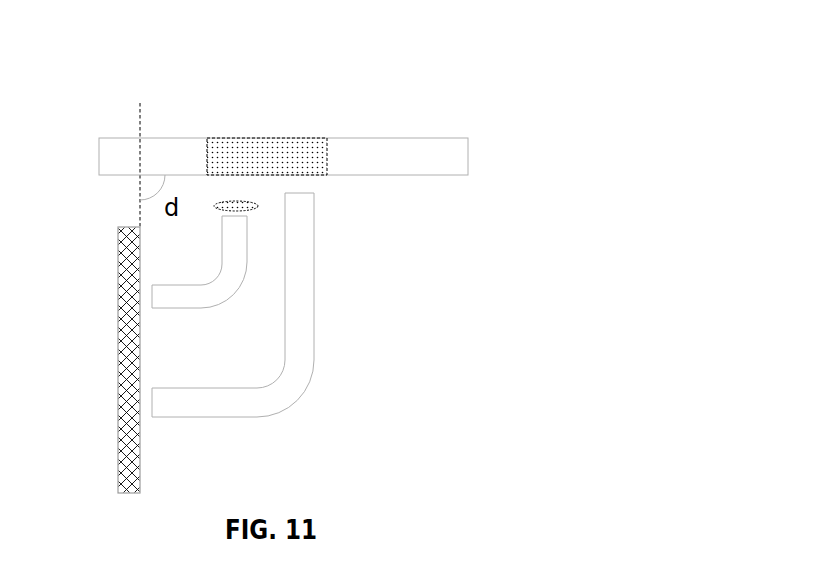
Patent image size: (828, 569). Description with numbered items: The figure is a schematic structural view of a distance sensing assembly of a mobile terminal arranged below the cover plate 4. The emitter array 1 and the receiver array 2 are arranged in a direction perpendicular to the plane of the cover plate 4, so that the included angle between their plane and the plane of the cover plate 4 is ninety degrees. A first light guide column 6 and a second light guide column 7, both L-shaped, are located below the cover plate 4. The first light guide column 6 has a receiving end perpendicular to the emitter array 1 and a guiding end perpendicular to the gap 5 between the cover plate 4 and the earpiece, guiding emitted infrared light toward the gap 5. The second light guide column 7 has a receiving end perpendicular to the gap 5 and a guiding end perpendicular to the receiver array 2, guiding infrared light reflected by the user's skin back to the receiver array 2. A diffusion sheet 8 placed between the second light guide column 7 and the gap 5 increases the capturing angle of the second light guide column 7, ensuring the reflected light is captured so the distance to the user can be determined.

The emitter array 1 is at (118, 403).
The receiver array 2 is at (118, 300).
The cover plate 4 is at (427, 138).
The gap 5 is at (310, 137).
The first light guide column 6 is at (315, 345).
The second light guide column 7 is at (247, 243).
The diffusion sheet 8 is at (256, 206).